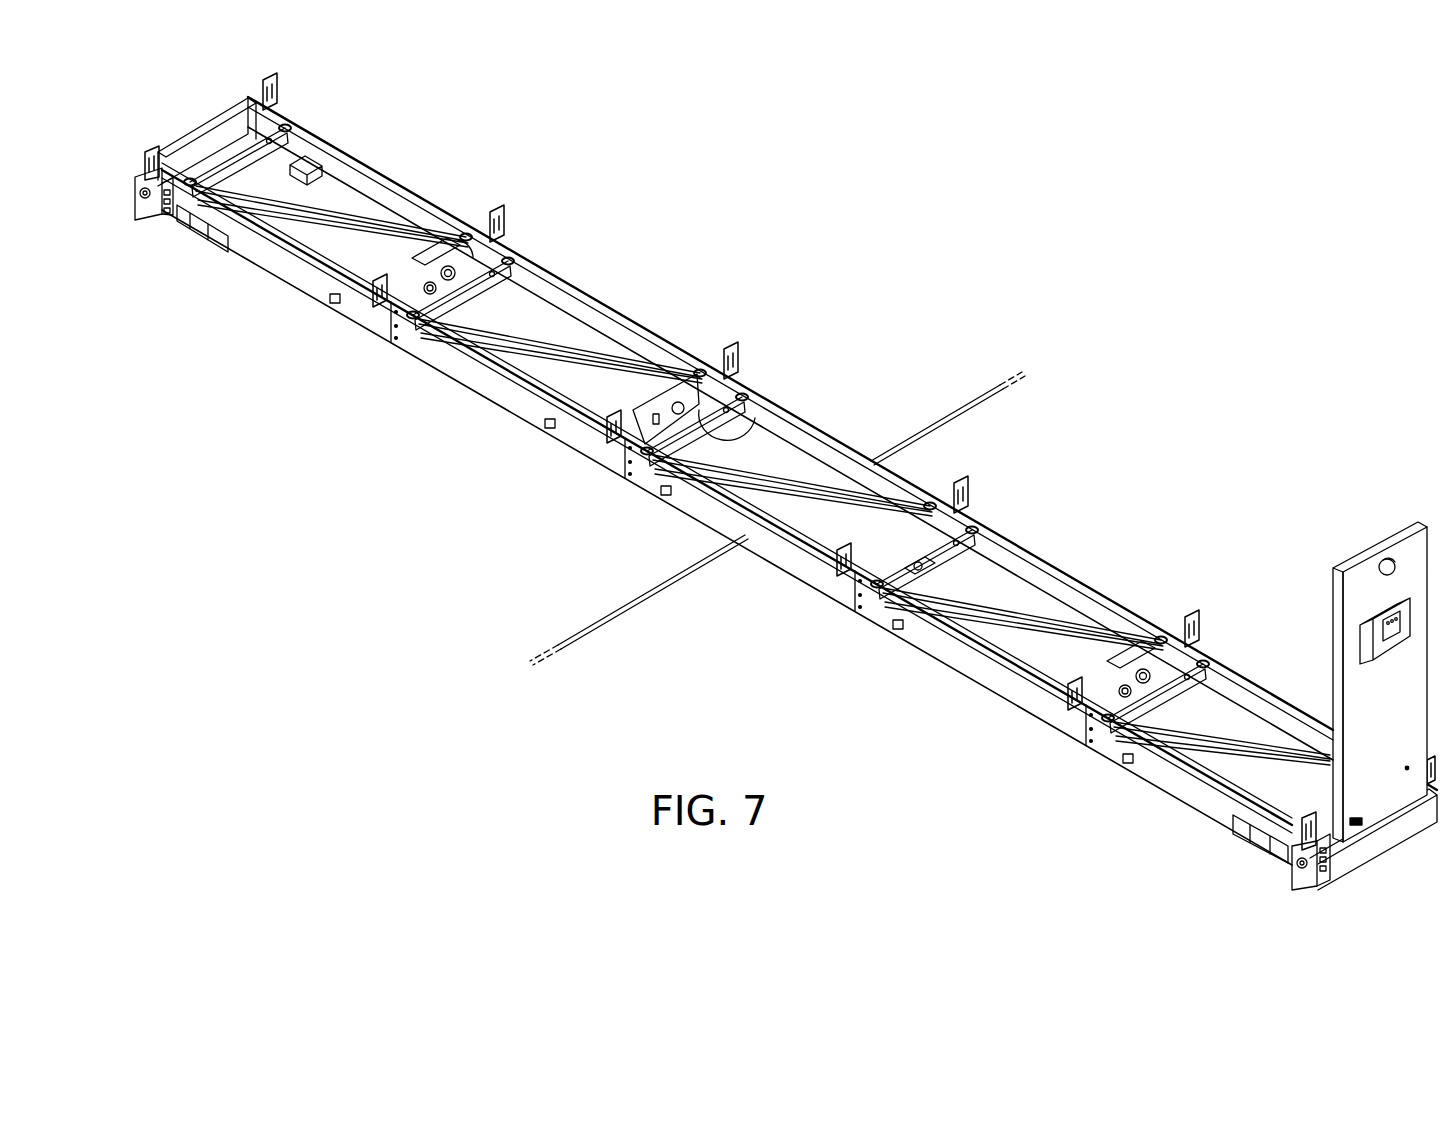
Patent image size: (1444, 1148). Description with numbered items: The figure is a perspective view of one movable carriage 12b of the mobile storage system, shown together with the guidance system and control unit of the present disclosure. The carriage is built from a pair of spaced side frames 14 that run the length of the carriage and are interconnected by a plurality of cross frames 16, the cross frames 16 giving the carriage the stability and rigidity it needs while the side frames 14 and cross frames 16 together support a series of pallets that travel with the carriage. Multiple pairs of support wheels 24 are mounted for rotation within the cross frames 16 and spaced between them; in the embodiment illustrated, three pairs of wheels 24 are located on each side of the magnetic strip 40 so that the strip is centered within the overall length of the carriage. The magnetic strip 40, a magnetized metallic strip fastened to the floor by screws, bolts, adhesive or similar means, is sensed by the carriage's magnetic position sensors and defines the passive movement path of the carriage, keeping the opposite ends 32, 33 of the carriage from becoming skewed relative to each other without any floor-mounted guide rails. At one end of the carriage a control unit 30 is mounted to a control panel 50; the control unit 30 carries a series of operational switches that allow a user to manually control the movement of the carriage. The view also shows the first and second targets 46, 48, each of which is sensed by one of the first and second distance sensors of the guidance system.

The movable carriage 12b is at (826, 697).
The side frames 14 is at (1100, 600).
The cross frames 16 is at (718, 438).
The support wheels 24 is at (474, 262).
The control unit 30 is at (1360, 640).
The opposite end of mobile carriage 32 is at (1408, 825).
The opposite end of mobile carriage 33 is at (213, 136).
The magnetic strip 40 is at (668, 578).
The first target 46 is at (1277, 860).
The second target 48 is at (215, 236).
The control panel 50 is at (1371, 578).